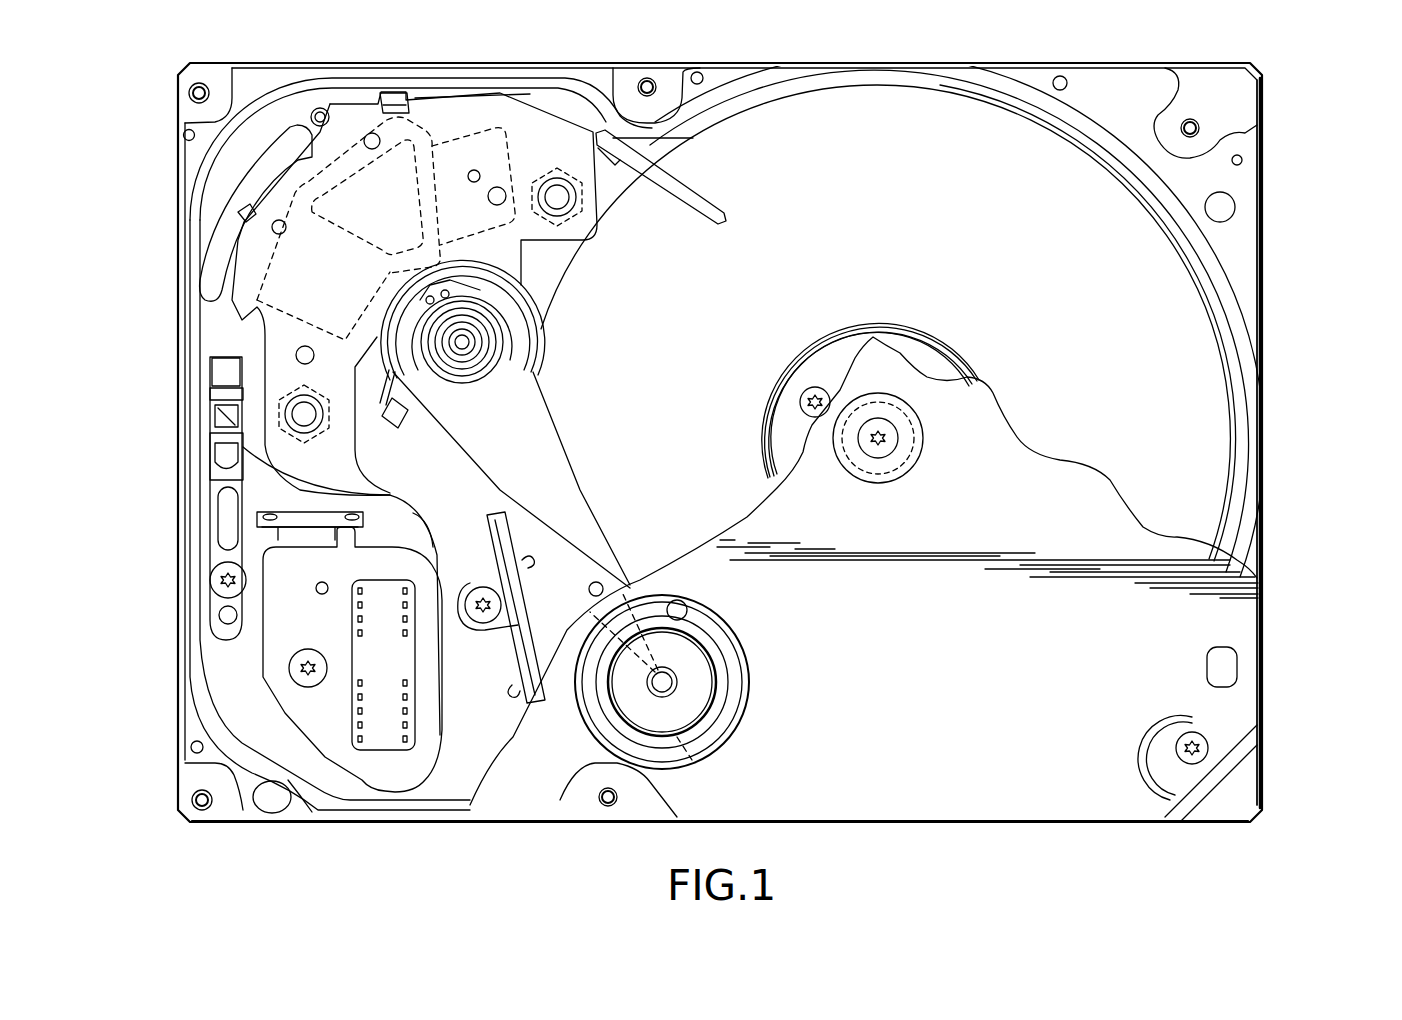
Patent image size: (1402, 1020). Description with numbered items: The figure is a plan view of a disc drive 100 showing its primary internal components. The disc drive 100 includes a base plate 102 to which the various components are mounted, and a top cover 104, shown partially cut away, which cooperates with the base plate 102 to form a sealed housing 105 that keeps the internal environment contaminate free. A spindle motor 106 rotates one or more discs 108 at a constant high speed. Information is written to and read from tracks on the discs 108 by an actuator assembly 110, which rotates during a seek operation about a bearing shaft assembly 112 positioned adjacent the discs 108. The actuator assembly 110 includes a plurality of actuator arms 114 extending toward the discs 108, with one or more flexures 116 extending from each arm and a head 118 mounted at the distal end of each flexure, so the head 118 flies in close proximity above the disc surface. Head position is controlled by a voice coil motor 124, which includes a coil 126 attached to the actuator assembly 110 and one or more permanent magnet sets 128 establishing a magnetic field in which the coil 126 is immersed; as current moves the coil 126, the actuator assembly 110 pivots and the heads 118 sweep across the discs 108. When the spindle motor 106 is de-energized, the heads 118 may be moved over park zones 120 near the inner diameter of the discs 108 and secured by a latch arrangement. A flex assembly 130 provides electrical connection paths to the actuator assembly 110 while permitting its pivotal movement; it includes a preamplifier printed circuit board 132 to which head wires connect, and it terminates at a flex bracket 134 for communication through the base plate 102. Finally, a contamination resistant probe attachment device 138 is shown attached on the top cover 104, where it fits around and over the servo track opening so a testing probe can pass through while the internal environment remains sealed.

The disc drive 100 is at (118, 128).
The base plate 102 is at (192, 777).
The top cover 104 is at (1245, 705).
The sealed housing 105 is at (1290, 630).
The spindle motor 106 is at (958, 425).
The discs 108 is at (820, 115).
The actuator assembly 110 is at (540, 325).
The bearing shaft assembly 112 is at (492, 345).
The actuator arms 114 is at (555, 413).
The flexures 116 is at (593, 598).
The head 118 is at (662, 673).
The park zones 120 is at (958, 348).
The voice coil motor 124 is at (405, 108).
The coil 126 is at (308, 185).
The permanent magnet sets 128 is at (283, 310).
The flex assembly 130 is at (455, 540).
The preamplifier printed circuit board 132 is at (447, 483).
The flex bracket 134 is at (278, 640).
The contamination resistant probe attachment device 138 is at (745, 743).